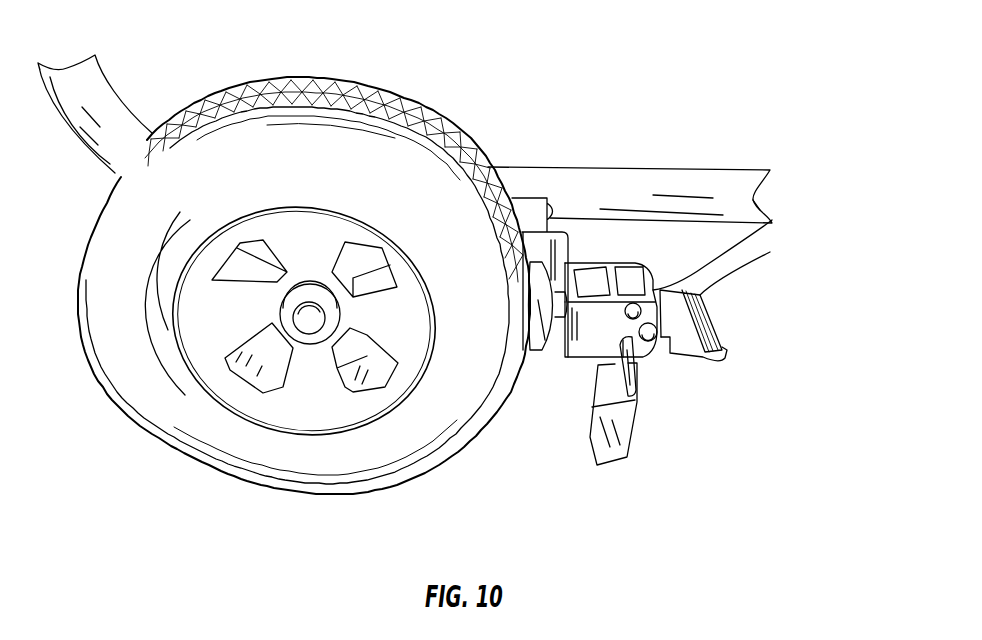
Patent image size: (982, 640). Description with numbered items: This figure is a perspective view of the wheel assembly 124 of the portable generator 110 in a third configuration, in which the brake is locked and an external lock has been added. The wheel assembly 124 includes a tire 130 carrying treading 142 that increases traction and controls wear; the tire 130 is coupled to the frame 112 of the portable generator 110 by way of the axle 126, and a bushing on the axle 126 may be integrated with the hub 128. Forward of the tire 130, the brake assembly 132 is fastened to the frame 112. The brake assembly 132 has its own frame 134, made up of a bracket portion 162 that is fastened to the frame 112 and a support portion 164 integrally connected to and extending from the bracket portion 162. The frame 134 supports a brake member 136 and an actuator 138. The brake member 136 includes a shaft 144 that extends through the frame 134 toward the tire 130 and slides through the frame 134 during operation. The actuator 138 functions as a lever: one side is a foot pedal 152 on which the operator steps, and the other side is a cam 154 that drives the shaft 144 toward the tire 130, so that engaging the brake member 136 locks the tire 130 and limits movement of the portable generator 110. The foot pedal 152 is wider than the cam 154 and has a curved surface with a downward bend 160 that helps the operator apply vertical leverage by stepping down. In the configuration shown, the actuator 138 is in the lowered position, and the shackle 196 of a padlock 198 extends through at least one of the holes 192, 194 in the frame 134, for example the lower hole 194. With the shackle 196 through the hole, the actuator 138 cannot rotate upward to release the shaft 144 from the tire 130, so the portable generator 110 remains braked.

The portable generator 110 is at (773, 110).
The frame 112 is at (633, 182).
The wheel assembly 124 is at (296, 278).
The axle 126 is at (310, 318).
The hub 128 is at (278, 410).
The tire 130 is at (293, 465).
The brake assembly 132 is at (685, 345).
The frame 134 is at (652, 328).
The brake member 136 is at (545, 330).
The actuator 138 is at (720, 350).
The treading 142 is at (197, 108).
The shaft 144 is at (566, 265).
The foot pedal 152 is at (770, 252).
The cam 154 is at (766, 189).
The downward bend 160 is at (705, 360).
The bracket portion 162 is at (538, 243).
The support portion 164 is at (592, 337).
The hole 192 is at (773, 219).
The lower hole 194 is at (647, 355).
The shackle 196 is at (635, 372).
The padlock 198 is at (617, 440).